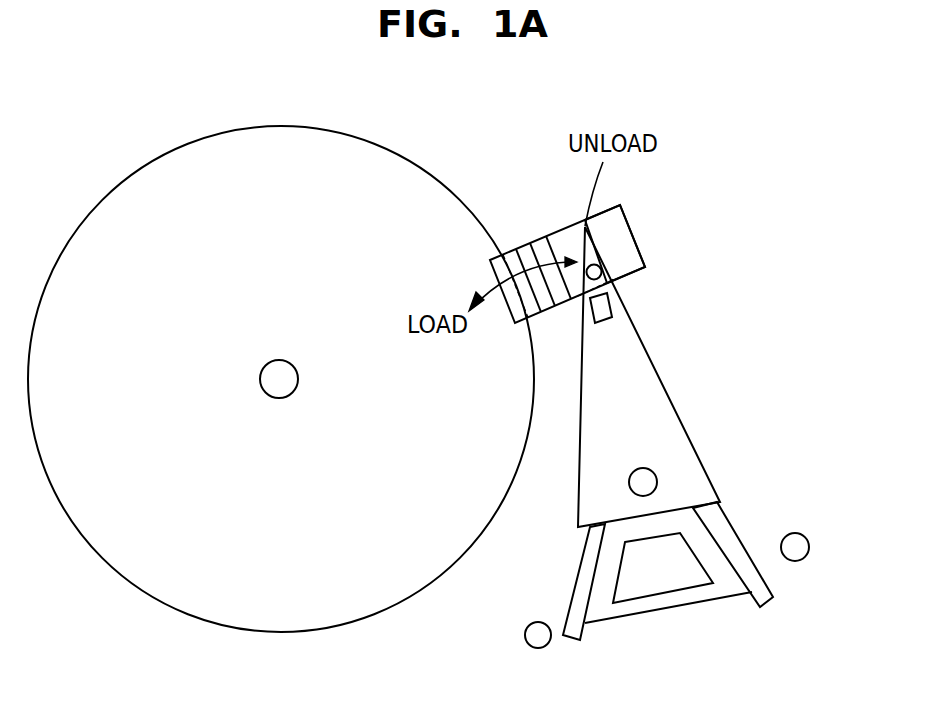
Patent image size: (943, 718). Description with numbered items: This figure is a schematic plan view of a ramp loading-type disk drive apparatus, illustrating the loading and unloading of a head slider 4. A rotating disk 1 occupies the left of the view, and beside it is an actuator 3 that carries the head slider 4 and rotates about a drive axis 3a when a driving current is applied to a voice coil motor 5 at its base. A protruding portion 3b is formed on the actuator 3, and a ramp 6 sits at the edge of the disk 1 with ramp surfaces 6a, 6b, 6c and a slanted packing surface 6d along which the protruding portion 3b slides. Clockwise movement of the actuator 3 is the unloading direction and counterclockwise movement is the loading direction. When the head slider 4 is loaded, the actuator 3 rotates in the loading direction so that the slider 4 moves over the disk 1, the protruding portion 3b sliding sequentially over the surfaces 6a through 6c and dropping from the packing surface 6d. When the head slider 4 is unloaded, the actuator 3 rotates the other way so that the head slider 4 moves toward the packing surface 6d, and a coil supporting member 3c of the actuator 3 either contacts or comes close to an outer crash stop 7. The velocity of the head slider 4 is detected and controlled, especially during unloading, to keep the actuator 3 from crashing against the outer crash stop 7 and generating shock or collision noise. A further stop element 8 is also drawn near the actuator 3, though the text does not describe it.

The disk 1 is at (282, 125).
The actuator 3 is at (663, 413).
The drive axis 3a is at (658, 478).
The protruding portion 3b is at (612, 278).
The coil supporting member 3c is at (588, 557).
The head slider 4 is at (612, 317).
The voice coil motor 5 is at (658, 608).
The ramp 6 is at (640, 223).
The ramp surface 6a is at (630, 245).
The ramp surface 6b is at (545, 245).
The ramp surface 6c is at (522, 250).
The packing surface 6d is at (505, 258).
The outer crash stop 7 is at (525, 637).
The stopper 8 is at (808, 545).